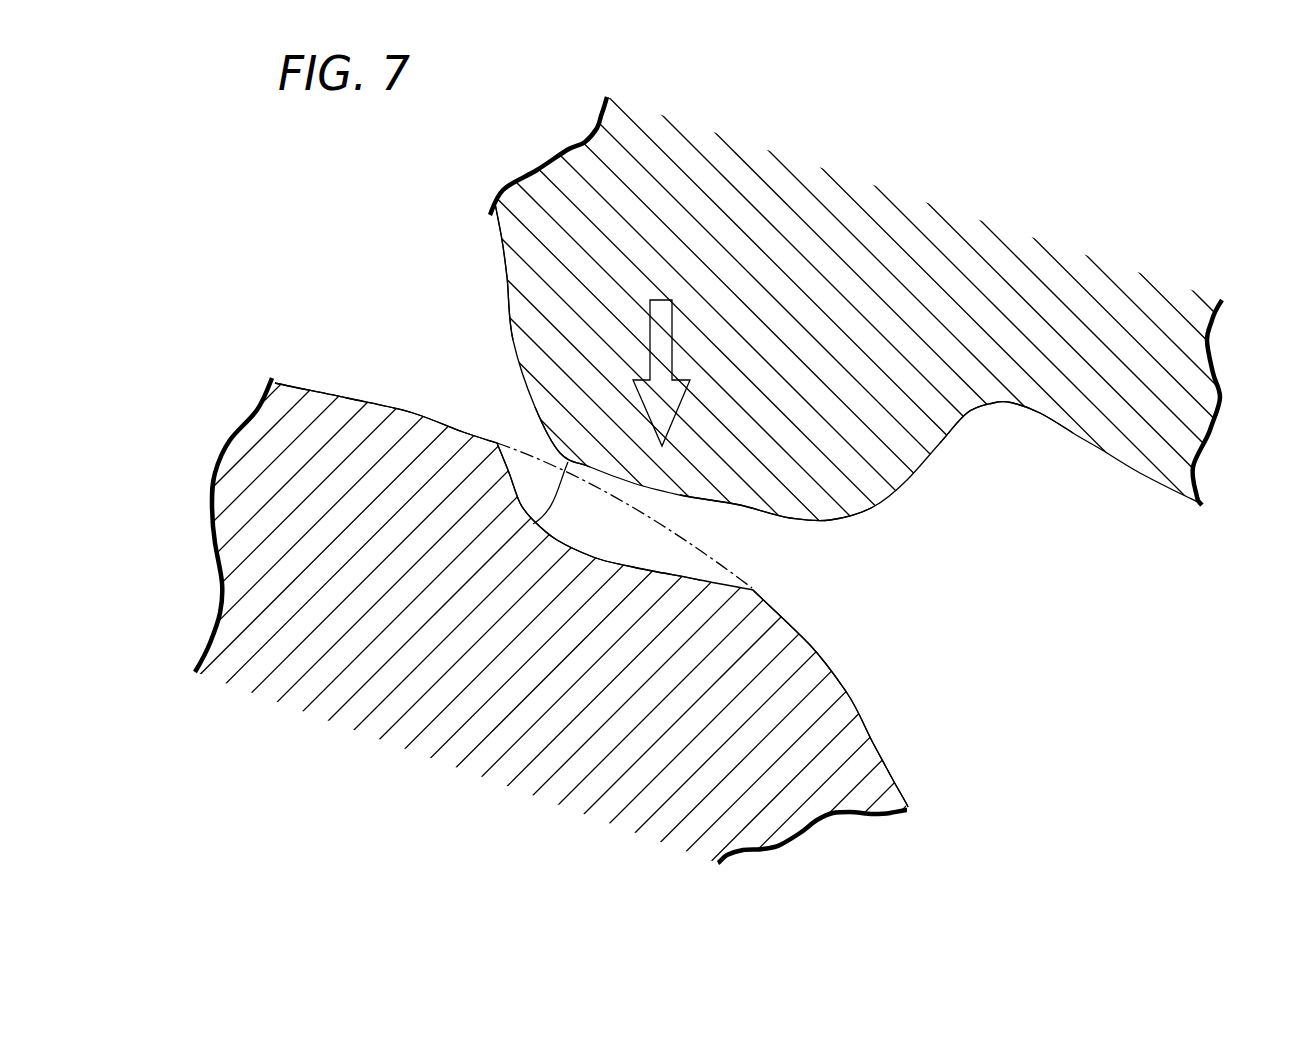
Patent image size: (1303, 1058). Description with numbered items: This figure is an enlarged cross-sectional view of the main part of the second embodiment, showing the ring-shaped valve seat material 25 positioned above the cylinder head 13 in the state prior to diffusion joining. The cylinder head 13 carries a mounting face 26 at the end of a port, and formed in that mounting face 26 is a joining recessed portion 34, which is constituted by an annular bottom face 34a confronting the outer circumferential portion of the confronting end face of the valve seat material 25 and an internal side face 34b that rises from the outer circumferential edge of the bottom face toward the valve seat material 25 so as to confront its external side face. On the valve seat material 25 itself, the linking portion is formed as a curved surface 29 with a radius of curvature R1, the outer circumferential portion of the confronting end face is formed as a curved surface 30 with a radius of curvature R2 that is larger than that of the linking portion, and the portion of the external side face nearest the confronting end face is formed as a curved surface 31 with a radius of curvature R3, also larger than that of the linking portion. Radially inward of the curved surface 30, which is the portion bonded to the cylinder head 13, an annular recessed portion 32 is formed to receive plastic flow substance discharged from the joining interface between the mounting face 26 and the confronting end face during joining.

The cylinder head 13 is at (800, 785).
The valve seat material 25 is at (848, 228).
The mounting face 26 is at (808, 645).
The curved surface 29 is at (548, 534).
The curved surface 30 is at (687, 500).
The curved surface 31 is at (505, 296).
The annular recessed portion 32 is at (993, 405).
The joining recessed portion 34 is at (614, 541).
The annular bottom face 34a is at (633, 562).
The internal side face 34b is at (496, 458).
The radius of curvature R1 is at (562, 452).
The radius of curvature R2 is at (745, 318).
The radius of curvature R3 is at (633, 297).